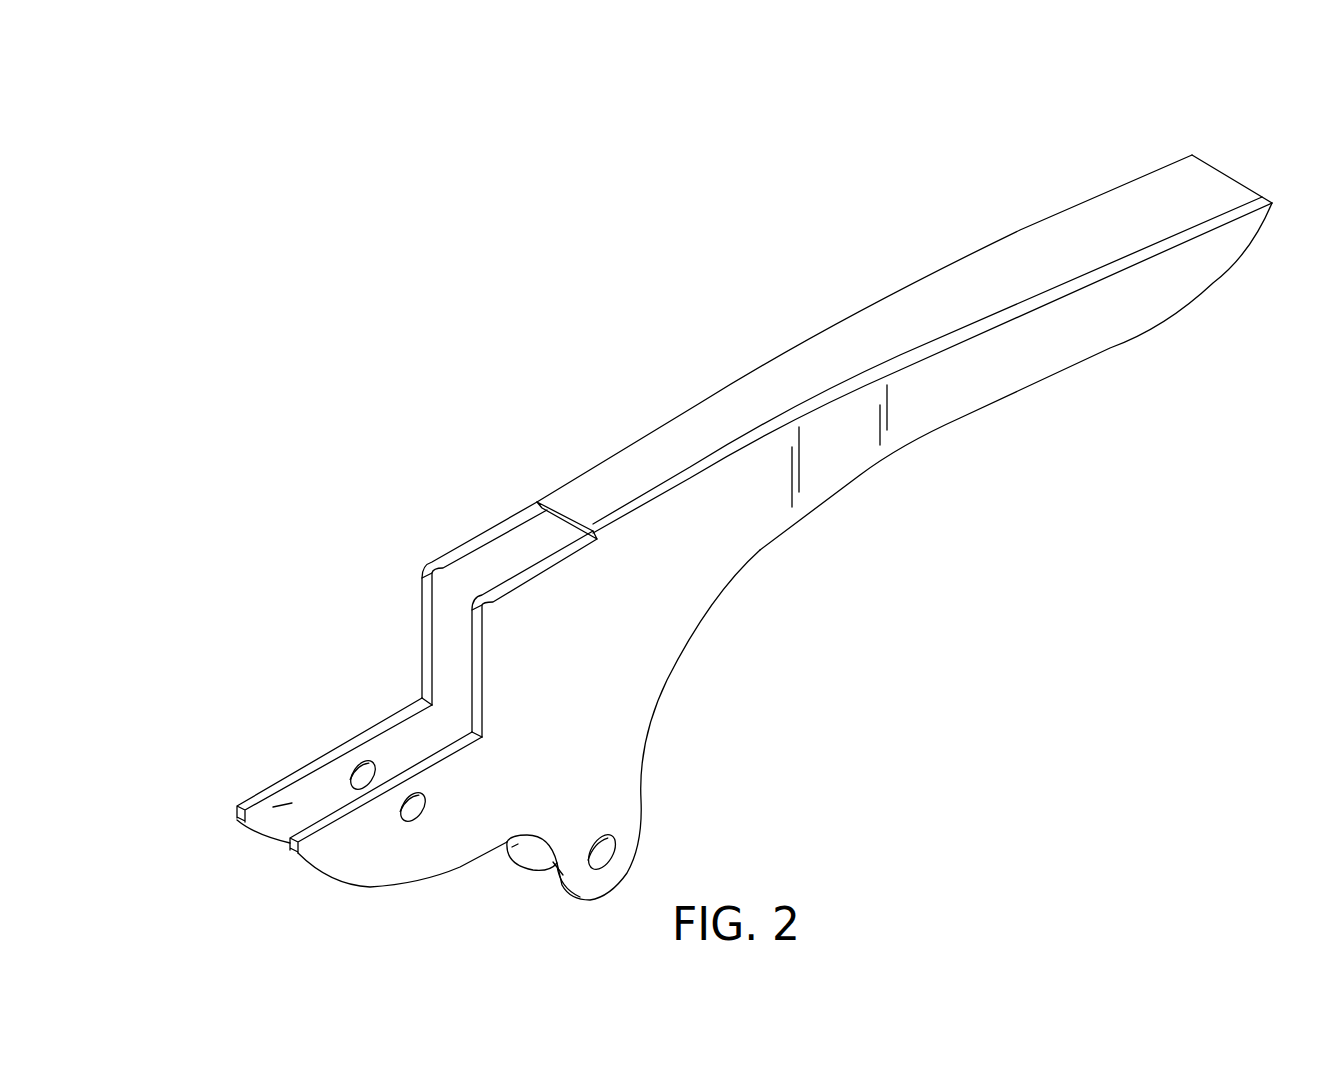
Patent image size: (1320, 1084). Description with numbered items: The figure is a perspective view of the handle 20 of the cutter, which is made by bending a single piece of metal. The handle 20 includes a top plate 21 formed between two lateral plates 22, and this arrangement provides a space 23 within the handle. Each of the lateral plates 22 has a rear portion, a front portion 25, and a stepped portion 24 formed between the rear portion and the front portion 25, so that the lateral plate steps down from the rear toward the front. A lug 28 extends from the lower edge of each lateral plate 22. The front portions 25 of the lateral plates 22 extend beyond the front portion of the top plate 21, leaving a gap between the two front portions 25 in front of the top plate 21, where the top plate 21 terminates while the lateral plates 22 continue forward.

The handle 20 is at (1137, 100).
The top plate 21 is at (1028, 275).
The lateral plates 22 is at (1123, 310).
The space 23 is at (560, 515).
The stepped portion 24 is at (443, 643).
The front portion 25 is at (260, 828).
The lug 28 is at (630, 848).